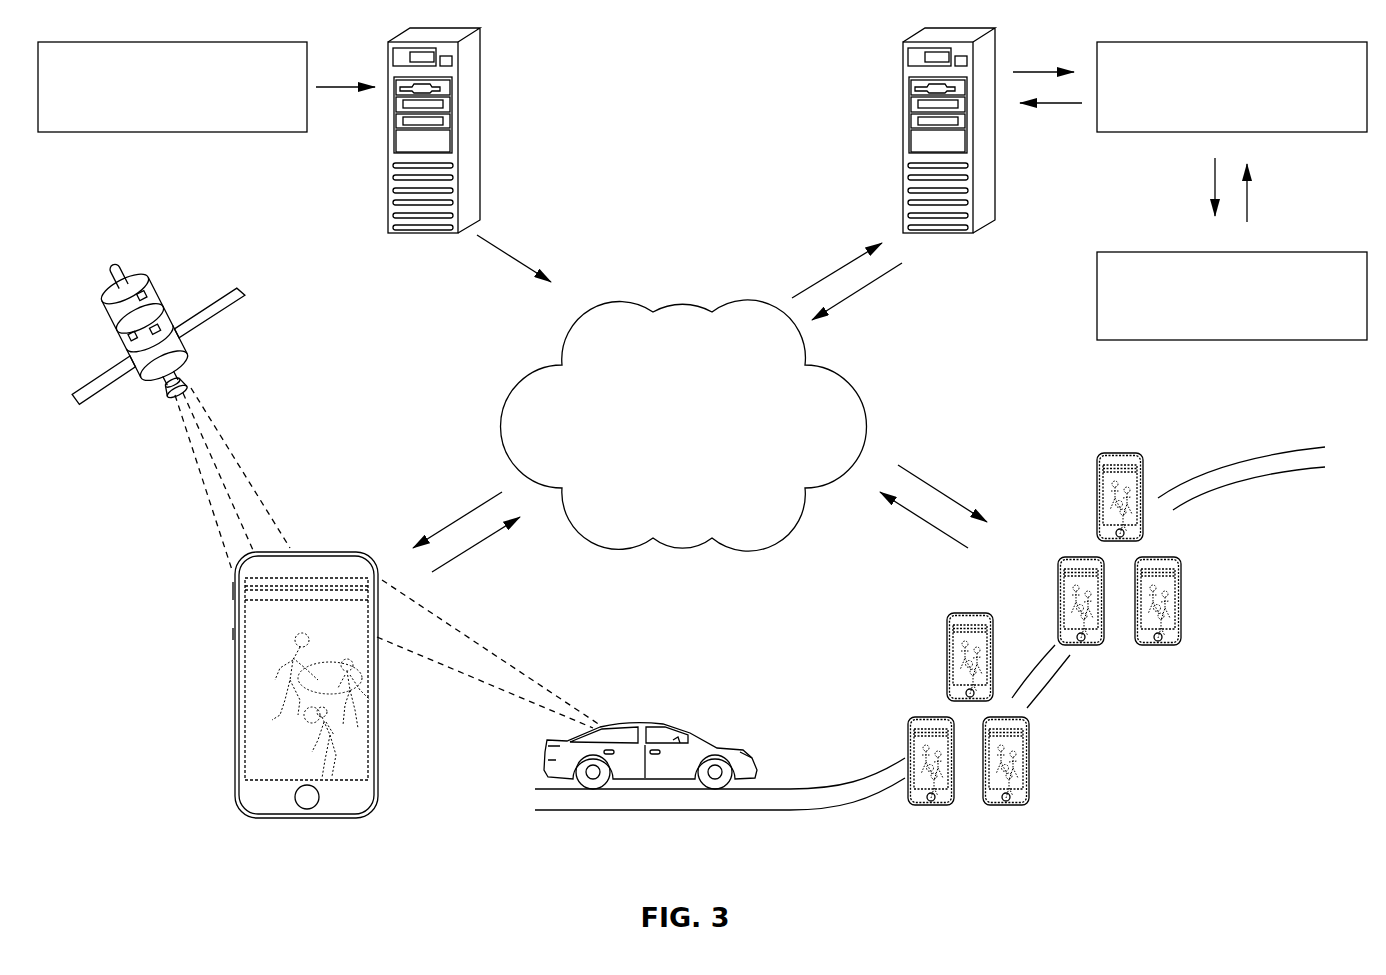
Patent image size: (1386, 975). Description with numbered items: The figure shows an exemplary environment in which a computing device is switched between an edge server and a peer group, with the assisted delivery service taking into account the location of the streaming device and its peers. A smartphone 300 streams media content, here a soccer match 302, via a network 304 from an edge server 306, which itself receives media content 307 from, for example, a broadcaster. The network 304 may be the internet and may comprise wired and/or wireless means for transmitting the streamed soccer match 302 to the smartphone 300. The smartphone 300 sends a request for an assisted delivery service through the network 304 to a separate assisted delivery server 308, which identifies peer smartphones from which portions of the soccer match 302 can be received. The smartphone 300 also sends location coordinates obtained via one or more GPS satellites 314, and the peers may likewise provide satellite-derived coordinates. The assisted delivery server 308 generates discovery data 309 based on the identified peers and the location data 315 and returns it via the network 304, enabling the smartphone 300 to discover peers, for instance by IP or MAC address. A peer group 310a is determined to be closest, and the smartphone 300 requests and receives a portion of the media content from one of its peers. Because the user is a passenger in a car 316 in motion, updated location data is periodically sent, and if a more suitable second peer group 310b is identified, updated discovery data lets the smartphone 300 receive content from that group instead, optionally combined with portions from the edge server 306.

The smartphone 300 is at (340, 668).
The soccer match 302 is at (360, 712).
The network 304 is at (535, 365).
The edge server 306 is at (481, 125).
The media content 307 is at (110, 42).
The assisted delivery server 308 is at (901, 158).
The discovery data 309 is at (1169, 42).
The peer group 310a is at (1068, 730).
The second peer group 310b is at (1168, 428).
The GPS satellite 314 is at (108, 305).
The location data 315 is at (1169, 252).
The car 316 is at (645, 725).